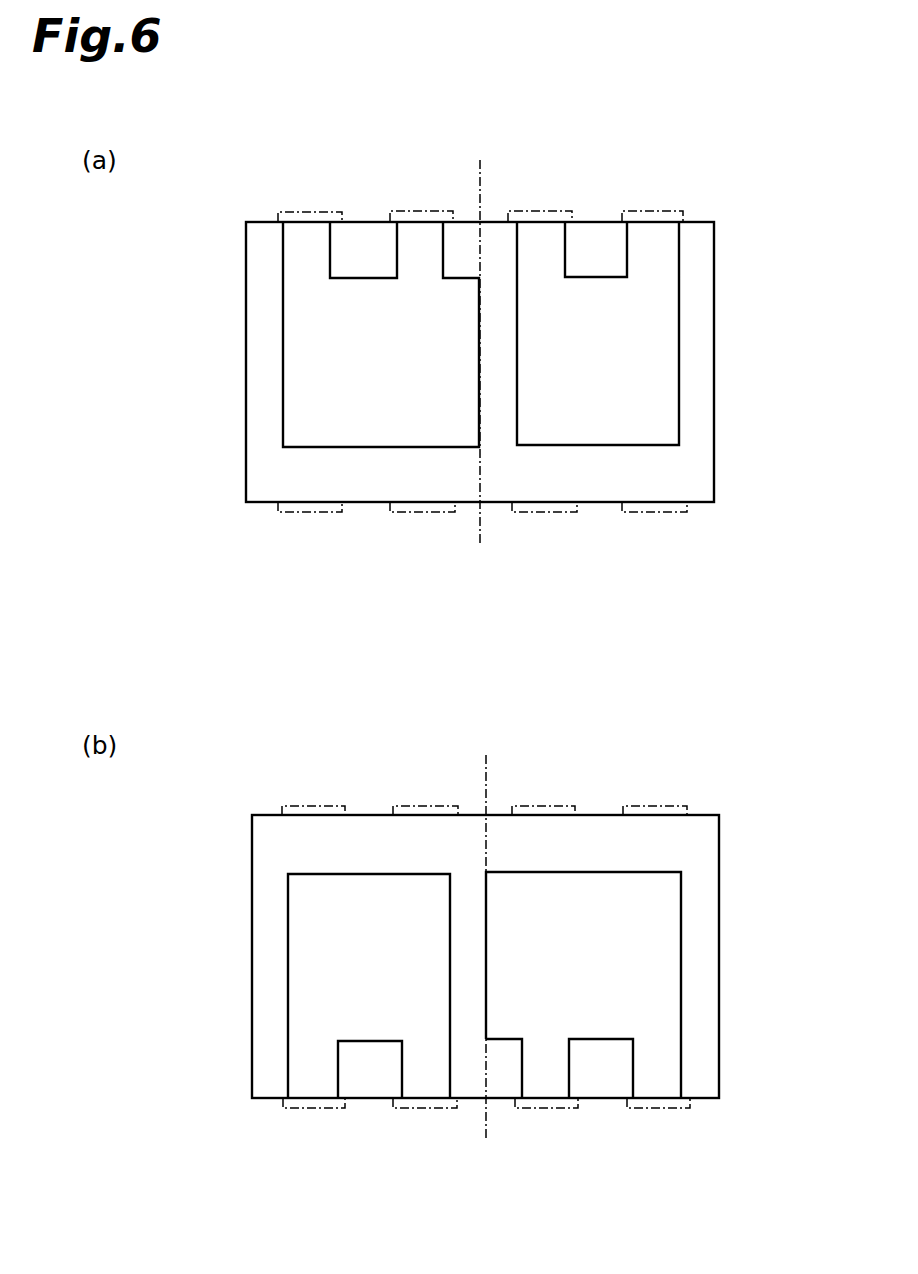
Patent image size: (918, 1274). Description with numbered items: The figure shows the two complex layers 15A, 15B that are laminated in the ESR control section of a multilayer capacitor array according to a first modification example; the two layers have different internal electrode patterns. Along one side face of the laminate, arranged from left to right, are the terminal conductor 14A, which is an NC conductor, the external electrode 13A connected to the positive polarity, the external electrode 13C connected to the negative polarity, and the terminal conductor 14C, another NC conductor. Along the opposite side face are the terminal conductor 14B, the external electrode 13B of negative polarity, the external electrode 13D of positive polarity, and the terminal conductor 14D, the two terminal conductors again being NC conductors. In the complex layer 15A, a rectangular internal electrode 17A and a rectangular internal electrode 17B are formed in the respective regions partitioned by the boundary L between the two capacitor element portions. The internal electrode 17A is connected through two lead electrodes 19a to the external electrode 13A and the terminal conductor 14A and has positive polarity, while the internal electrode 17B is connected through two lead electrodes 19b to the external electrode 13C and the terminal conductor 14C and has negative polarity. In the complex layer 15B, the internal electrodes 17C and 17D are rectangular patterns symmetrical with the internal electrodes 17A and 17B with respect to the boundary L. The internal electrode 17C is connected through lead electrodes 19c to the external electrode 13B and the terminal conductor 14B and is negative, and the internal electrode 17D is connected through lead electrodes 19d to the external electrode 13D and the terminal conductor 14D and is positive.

The external electrode 13A is at (402, 211).
The external electrode 13B is at (401, 513).
The external electrode 13C is at (566, 211).
The external electrode 13D is at (564, 513).
The terminal conductor 14A is at (292, 212).
The terminal conductor 14B is at (292, 513).
The terminal conductor 14C is at (679, 211).
The terminal conductor 14D is at (683, 513).
The complex layer 15A is at (766, 194).
The complex layer 15B is at (766, 794).
The internal electrode 17A is at (300, 352).
The internal electrode 17B is at (660, 348).
The internal electrode 17C is at (308, 968).
The internal electrode 17D is at (665, 962).
The lead electrode 19a is at (297, 257).
The lead electrode 19b is at (553, 252).
The lead electrode 19c is at (298, 1072).
The lead electrode 19d is at (565, 1070).
The boundary L is at (482, 532).